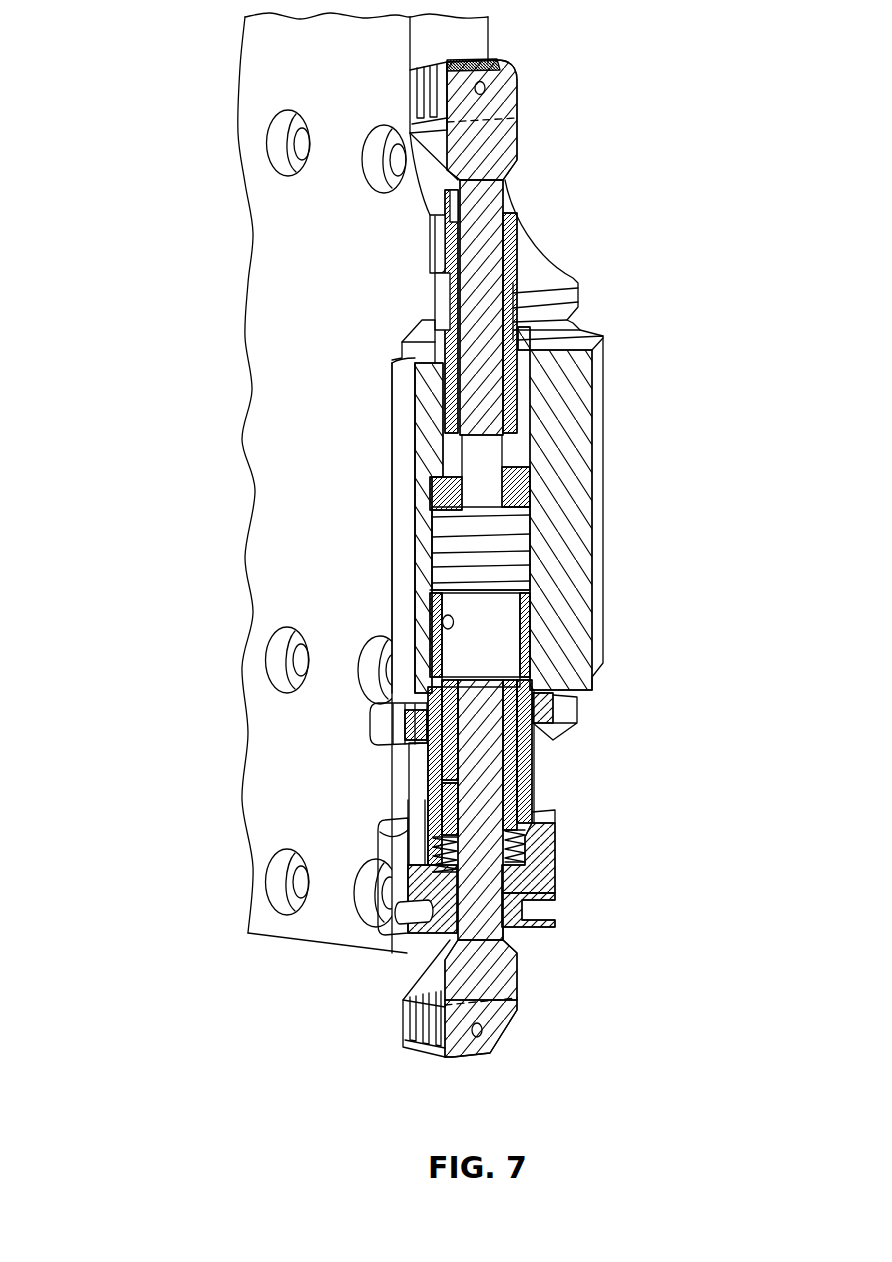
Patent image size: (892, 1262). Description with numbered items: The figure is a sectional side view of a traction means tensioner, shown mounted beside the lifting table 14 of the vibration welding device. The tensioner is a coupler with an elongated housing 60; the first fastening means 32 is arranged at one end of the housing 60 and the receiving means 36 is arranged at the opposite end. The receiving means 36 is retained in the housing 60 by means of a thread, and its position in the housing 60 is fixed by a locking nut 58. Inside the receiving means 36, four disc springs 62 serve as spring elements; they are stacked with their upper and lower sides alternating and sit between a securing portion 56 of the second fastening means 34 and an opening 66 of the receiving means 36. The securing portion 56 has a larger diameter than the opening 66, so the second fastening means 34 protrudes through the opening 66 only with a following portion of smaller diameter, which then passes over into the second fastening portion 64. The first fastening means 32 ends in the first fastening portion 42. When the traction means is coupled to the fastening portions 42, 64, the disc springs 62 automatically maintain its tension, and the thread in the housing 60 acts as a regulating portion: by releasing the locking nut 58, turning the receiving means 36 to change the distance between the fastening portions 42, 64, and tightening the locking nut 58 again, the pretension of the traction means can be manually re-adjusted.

The lifting table 14 is at (270, 288).
The first fastening portion 42 is at (513, 80).
The first fastening means 32 is at (490, 143).
The housing 60 is at (565, 390).
The receiving means 36 is at (527, 636).
The locking nut 58 is at (553, 704).
The securing portion 56 is at (483, 810).
The disc springs 62 is at (517, 855).
The opening 66 is at (527, 895).
The second fastening means 34 is at (480, 963).
The second fastening portion 64 is at (490, 1010).